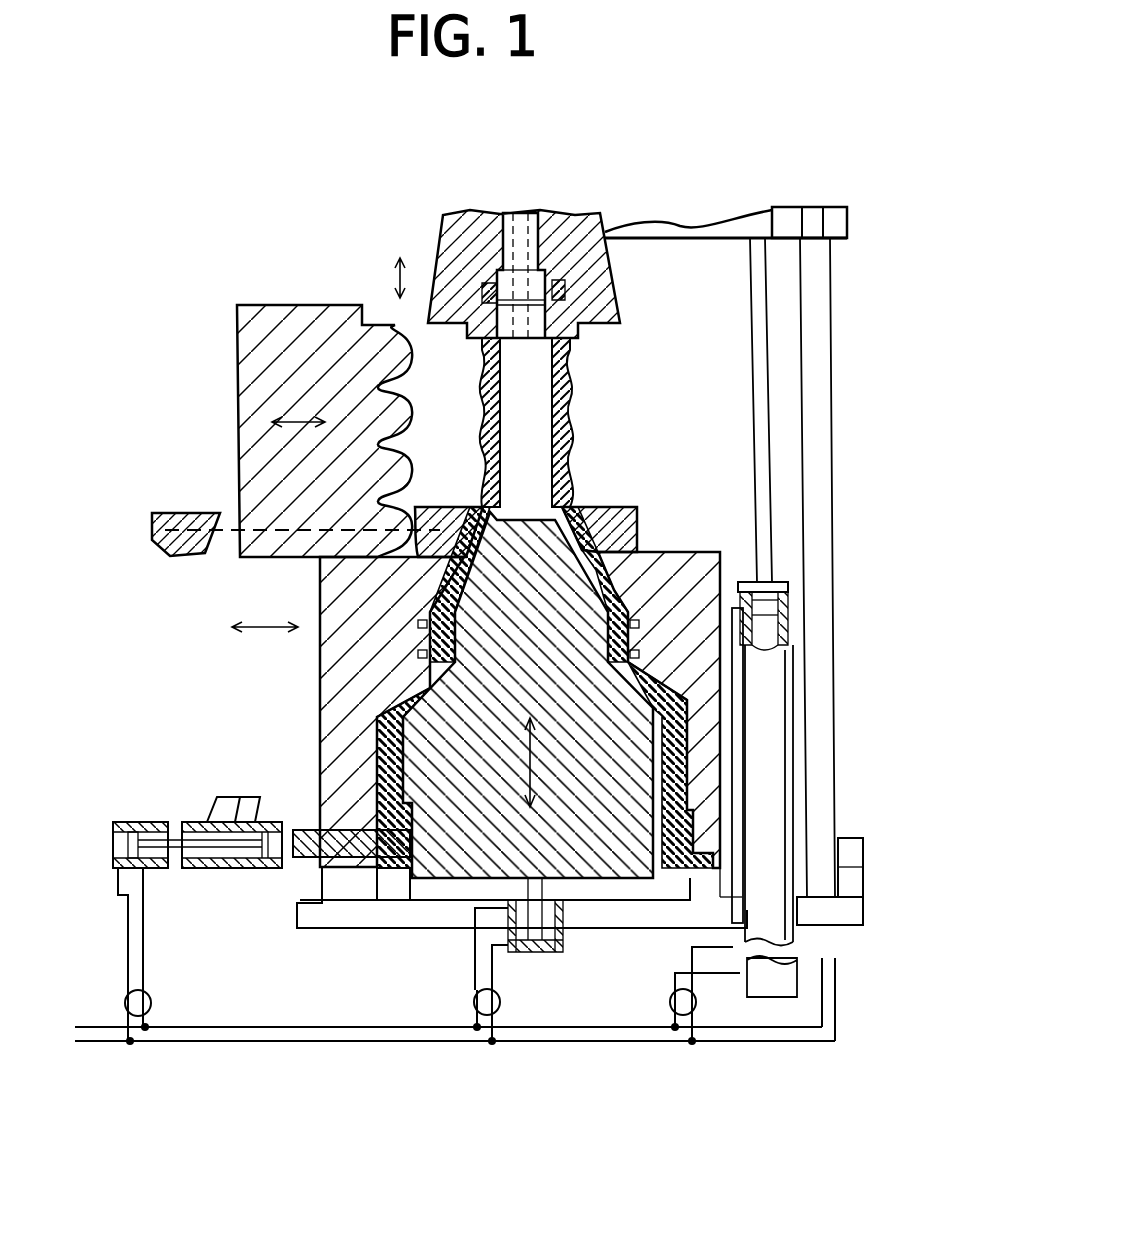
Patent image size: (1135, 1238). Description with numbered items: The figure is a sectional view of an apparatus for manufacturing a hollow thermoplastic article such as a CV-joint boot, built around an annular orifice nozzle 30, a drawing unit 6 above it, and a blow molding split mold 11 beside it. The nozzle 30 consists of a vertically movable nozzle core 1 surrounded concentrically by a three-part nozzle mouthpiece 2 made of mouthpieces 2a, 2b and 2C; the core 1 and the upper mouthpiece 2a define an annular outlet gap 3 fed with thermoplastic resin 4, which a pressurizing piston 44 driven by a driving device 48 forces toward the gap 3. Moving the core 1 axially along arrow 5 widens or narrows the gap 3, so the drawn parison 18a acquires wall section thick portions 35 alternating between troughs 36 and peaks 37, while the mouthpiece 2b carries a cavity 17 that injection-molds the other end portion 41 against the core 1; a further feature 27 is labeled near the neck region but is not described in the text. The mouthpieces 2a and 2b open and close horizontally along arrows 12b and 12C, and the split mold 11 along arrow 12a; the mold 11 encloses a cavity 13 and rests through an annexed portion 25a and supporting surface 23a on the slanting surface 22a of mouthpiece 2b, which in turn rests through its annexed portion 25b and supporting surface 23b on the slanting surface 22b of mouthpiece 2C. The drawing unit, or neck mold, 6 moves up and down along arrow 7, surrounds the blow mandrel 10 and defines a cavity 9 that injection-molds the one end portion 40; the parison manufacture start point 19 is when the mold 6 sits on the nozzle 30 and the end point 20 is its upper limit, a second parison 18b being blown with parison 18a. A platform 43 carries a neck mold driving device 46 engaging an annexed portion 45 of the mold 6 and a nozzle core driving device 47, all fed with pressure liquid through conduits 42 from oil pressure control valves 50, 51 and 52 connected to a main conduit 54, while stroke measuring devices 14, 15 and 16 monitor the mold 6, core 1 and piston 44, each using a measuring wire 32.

The nozzle core 1 is at (590, 505).
The nozzle mouthpiece 2 is at (800, 635).
The nozzle mouthpiece 2a is at (170, 530).
The nozzle mouthpiece 2b is at (660, 565).
The nozzle mouthpiece 2C is at (743, 790).
The outlet gap 3 is at (573, 505).
The thermoplastic resin 4 is at (380, 760).
The arrow 5 is at (600, 790).
The drawing unit 6 is at (460, 245).
The arrow 7 is at (393, 272).
The cavity 9 is at (560, 297).
The blow mandrel 10 is at (533, 213).
The blow molding split mold 11 is at (280, 455).
The arrow 12a is at (265, 405).
The arrow 12b is at (325, 520).
The arrow 12C is at (232, 627).
The cavity 13 is at (395, 398).
The stroke measuring device 14 is at (838, 740).
The stroke measuring device 15 is at (380, 900).
The stroke measuring device 16 is at (238, 797).
The cavity 17 is at (790, 690).
The parison 18a is at (567, 380).
The parison 18b is at (490, 500).
The parison manufacture start point 19 is at (576, 507).
The parison manufacture end point 20 is at (835, 250).
The slanting surface 22a is at (640, 522).
The slanting surface 22b is at (425, 670).
The supporting surface 23a is at (320, 572).
The supporting surface 23b is at (390, 690).
The annexed portion 25a is at (262, 560).
The annexed portion 25b is at (425, 650).
The neck shoulder 27 is at (573, 497).
The annular orifice nozzle 30 is at (440, 507).
The measuring wire 32 is at (540, 355).
The wall section thick portion 35 is at (562, 425).
The trough 36 is at (560, 403).
The peak 37 is at (573, 460).
The one end portion 40 is at (565, 285).
The other end portion 41 is at (418, 625).
The conduit 42 is at (475, 960).
The platform 43 is at (835, 925).
The pressurizing piston 44 is at (262, 868).
The annexed portion 45 is at (813, 222).
The neck mold driving device 46 is at (770, 582).
The nozzle core driving device 47 is at (560, 945).
The driving device 48 is at (137, 812).
The oil pressure control valve 50 is at (670, 1000).
The oil pressure control valve 51 is at (474, 1002).
The oil pressure control valve 52 is at (151, 1003).
The main conduit 54 is at (305, 1041).